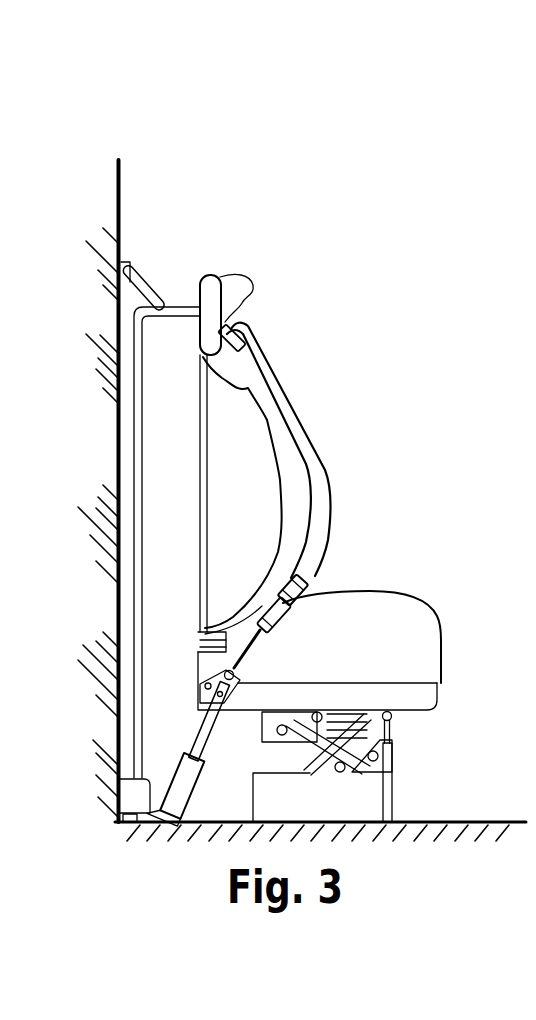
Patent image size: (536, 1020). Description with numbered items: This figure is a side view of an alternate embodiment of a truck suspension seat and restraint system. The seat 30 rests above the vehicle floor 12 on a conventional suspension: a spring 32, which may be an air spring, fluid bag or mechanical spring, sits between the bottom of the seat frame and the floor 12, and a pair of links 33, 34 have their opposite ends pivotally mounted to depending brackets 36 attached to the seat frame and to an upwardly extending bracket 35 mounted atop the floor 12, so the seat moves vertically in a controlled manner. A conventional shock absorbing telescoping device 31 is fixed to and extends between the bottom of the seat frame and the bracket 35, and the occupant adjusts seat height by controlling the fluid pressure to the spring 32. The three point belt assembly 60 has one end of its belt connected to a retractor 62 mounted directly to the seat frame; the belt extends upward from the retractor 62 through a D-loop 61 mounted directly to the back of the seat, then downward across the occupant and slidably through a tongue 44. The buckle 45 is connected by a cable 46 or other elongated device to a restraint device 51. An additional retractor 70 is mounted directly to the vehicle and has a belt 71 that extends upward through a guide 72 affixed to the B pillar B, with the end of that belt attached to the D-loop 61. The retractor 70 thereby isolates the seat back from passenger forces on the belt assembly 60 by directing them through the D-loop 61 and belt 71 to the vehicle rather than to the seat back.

The B pillar B is at (118, 208).
The vehicle floor 12 is at (446, 822).
The seat 30 is at (385, 593).
The shock absorbing telescoping device 31 is at (395, 731).
The spring 32 is at (384, 711).
The link 33 is at (278, 756).
The link 34 is at (386, 760).
The upwardly extending bracket 35 is at (262, 795).
The depending brackets 36 is at (290, 712).
The tongue 44 is at (308, 586).
The buckle 45 is at (258, 590).
The cable 46 is at (247, 637).
The restraint device 51 is at (174, 774).
The three point belt assembly 60 is at (302, 431).
The D-loop 61 is at (230, 316).
The retractor 62 is at (200, 644).
The additional retractor 70 is at (123, 793).
The belt 71 is at (134, 448).
The guide 72 is at (145, 298).